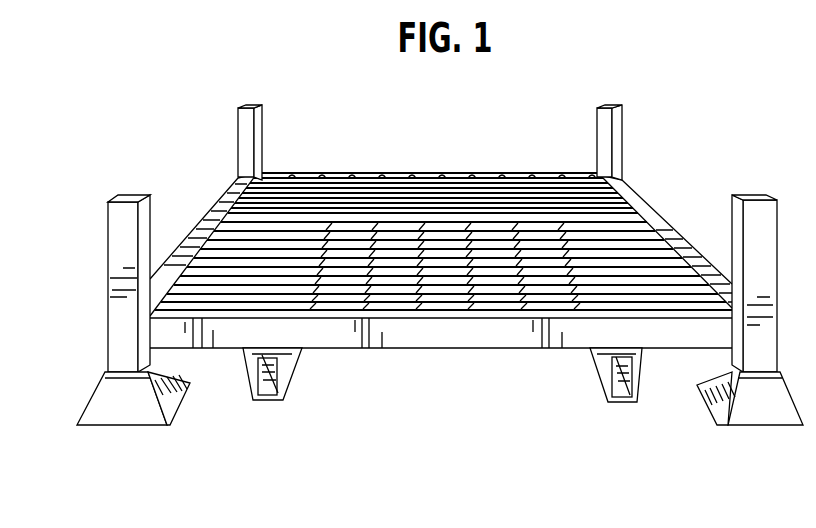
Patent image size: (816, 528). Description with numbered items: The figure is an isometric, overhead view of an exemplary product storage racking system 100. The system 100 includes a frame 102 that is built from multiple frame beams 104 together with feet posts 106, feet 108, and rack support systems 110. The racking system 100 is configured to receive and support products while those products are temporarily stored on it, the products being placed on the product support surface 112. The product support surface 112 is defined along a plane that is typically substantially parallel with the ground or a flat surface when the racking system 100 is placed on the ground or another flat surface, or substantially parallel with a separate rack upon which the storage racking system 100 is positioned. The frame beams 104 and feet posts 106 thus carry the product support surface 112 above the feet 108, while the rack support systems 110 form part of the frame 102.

The product storage racking system 100 is at (416, 267).
The frame 102 is at (430, 211).
The frame beams 104 is at (215, 218).
The feet posts 106 is at (123, 253).
The feet 108 is at (117, 408).
The rack support systems 110 is at (263, 368).
The product support surface 112 is at (388, 156).